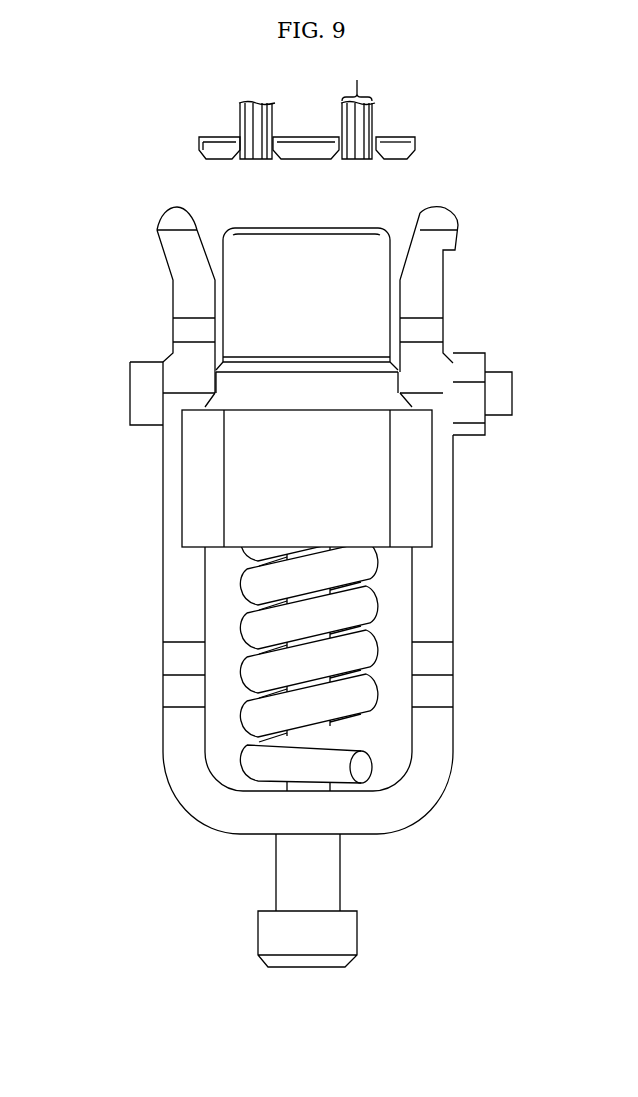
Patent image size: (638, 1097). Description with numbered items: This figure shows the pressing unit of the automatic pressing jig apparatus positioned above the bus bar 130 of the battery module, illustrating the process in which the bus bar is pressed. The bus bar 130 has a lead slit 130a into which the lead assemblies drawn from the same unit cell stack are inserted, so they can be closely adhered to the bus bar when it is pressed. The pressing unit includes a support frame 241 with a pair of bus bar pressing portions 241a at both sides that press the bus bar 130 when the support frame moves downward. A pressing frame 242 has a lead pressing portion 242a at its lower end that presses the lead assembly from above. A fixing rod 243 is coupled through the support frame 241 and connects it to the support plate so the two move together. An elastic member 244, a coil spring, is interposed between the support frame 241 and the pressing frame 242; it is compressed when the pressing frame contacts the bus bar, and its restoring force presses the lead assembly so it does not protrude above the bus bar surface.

The bus bar 130 is at (336, 117).
The lead slit 130a is at (342, 138).
The support frame 241 is at (309, 520).
The bus bar pressing portion 241a is at (158, 238).
The pressing frame 242 is at (373, 478).
The lead pressing portion 242a is at (332, 228).
The fixing rod 243 is at (340, 872).
The elastic member 244 is at (347, 673).